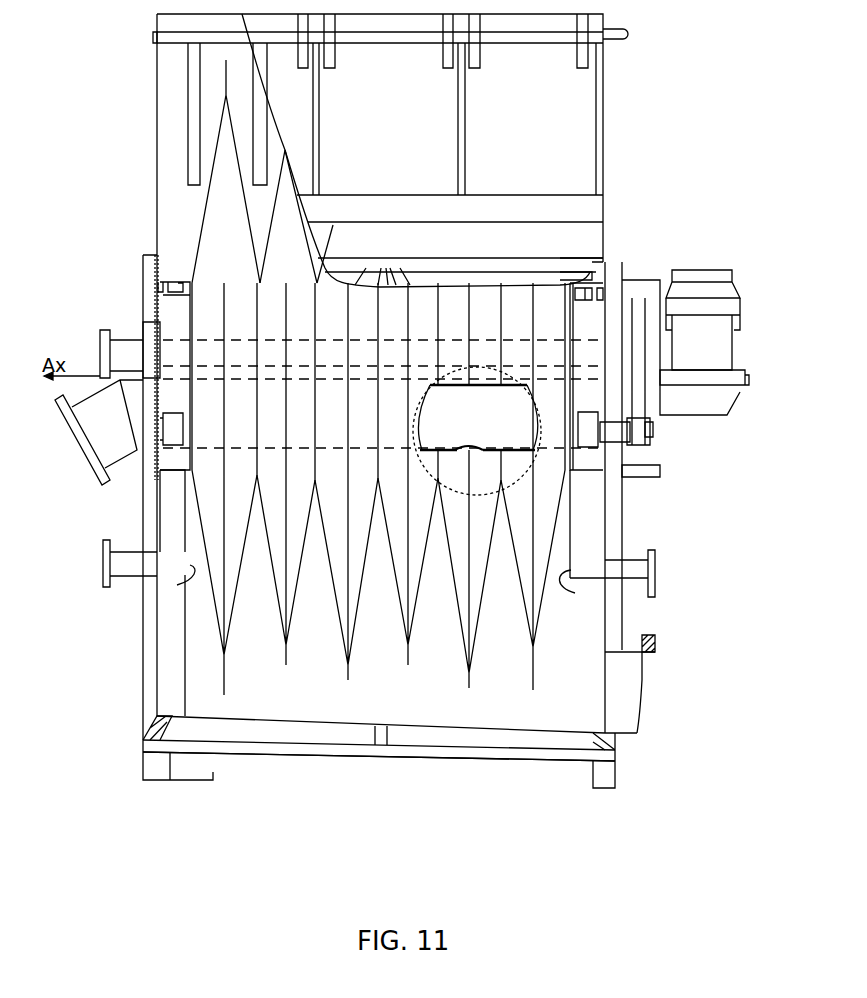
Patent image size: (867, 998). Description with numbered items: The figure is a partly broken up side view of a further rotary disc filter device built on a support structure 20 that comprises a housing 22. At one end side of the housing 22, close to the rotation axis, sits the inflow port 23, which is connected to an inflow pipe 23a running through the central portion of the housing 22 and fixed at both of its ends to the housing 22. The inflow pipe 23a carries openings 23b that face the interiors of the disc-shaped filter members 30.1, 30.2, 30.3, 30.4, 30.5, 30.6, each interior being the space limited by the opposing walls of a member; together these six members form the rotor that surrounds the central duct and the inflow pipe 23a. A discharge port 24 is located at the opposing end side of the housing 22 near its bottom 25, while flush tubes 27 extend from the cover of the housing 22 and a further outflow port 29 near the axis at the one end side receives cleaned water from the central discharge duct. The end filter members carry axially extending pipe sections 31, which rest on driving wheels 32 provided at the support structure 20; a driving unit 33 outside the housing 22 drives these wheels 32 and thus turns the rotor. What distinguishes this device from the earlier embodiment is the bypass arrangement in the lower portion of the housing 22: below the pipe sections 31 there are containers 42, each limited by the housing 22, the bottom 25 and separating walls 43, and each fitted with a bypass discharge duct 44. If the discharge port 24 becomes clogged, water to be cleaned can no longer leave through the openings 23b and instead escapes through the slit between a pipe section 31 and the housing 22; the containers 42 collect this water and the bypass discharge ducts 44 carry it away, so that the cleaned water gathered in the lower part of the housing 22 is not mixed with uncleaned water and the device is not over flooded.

The support structure 20 is at (98, 172).
The housing 22 is at (157, 632).
The inflow port 23 is at (93, 448).
The inflow pipe 23a is at (493, 433).
The openings 23b is at (473, 450).
The discharge port 24 is at (652, 672).
The bottom 25 is at (540, 740).
The flush tubes 27 is at (185, 80).
The outflow port 29 is at (120, 340).
The pipe section 31 is at (173, 312).
The driving wheels 32 is at (172, 423).
The driving unit 33 is at (707, 283).
The containers 42 is at (170, 512).
The separating walls 43 is at (177, 585).
The bypass discharge duct 44 is at (103, 558).
The disc-shaped filter member 30.1 is at (535, 636).
The disc-shaped filter member 30.2 is at (471, 660).
The disc-shaped filter member 30.3 is at (410, 632).
The disc-shaped filter member 30.4 is at (350, 652).
The disc-shaped filter member 30.5 is at (288, 632).
The disc-shaped filter member 30.6 is at (226, 640).